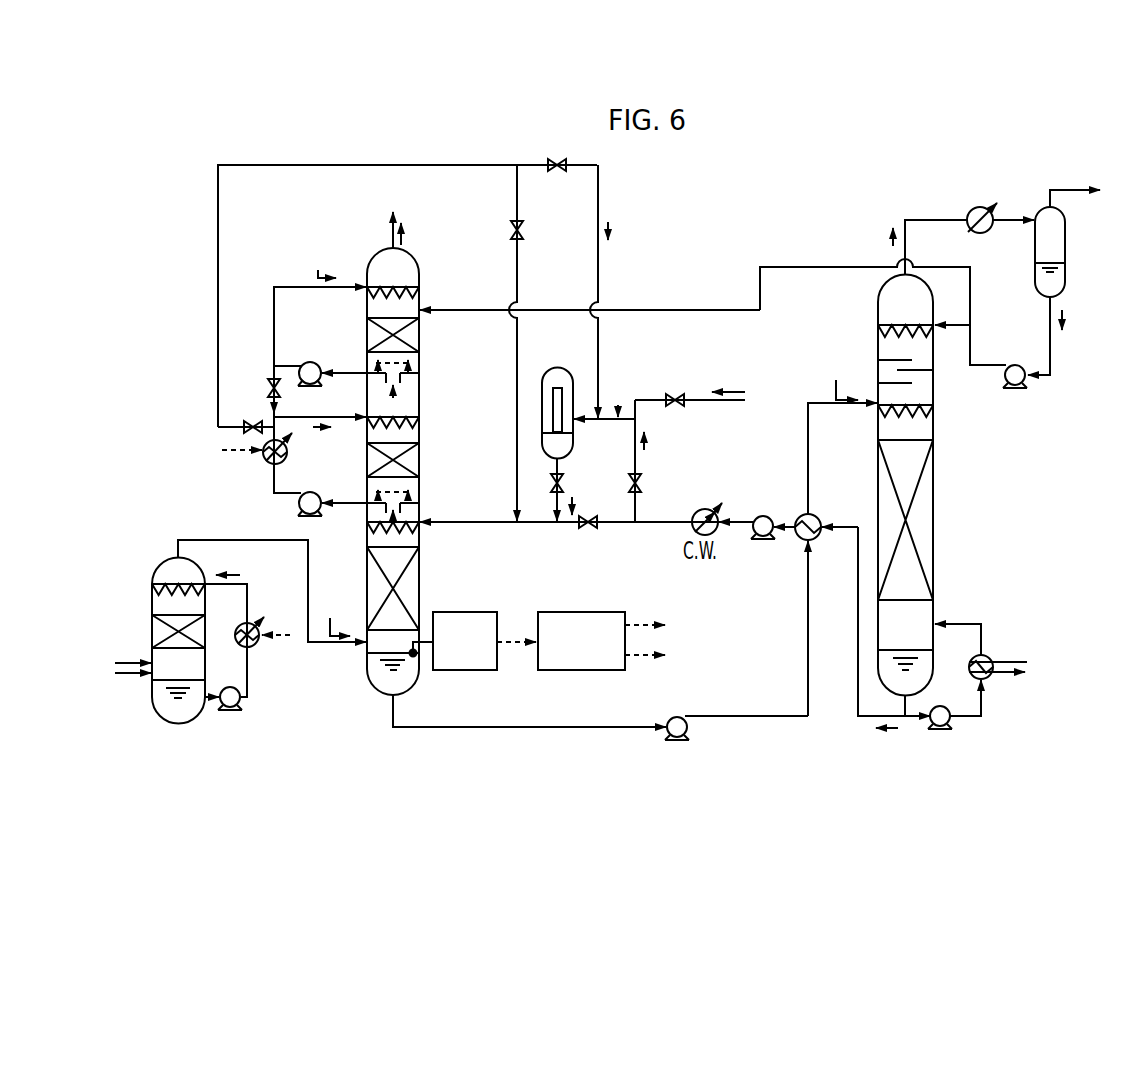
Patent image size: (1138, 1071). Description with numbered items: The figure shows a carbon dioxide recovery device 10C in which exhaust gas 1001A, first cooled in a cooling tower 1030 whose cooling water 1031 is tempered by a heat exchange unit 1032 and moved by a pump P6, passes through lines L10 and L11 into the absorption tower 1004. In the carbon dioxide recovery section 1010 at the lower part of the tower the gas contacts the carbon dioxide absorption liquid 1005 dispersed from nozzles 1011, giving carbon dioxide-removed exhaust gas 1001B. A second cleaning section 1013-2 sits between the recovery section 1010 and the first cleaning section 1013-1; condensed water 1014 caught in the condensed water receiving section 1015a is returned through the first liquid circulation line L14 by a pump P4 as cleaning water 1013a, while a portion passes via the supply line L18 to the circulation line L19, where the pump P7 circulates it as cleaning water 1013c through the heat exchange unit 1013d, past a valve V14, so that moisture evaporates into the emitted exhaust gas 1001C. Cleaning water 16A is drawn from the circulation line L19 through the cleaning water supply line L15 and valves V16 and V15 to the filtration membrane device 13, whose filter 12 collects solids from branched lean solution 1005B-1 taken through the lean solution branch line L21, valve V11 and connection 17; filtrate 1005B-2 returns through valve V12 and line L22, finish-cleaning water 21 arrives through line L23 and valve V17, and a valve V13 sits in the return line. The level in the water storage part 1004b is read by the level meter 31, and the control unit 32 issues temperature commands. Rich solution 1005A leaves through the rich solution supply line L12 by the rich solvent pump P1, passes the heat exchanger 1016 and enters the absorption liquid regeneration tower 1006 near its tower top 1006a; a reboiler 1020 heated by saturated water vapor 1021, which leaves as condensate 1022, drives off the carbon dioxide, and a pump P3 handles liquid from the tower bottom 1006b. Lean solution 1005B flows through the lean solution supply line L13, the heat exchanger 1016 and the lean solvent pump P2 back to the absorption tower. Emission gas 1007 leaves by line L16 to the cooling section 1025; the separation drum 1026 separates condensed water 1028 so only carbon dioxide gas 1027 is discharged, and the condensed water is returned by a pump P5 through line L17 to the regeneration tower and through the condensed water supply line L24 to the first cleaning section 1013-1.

The absorption tower 1004 is at (334, 242).
The water storage part 1004b is at (384, 692).
The CO2-absorption-solution-removed exhaust gas 1001C is at (402, 236).
The nozzles 1011 is at (420, 294).
The first cleaning section 1013-1 is at (367, 342).
The second cleaning section 1013-2 is at (419, 455).
The CO2 recovery section 1010 is at (419, 594).
The condensed water 1014 is at (420, 370).
The condensed water receiving section 1015a is at (367, 384).
The CO2-removed exhaust gas 1001B is at (392, 518).
The pump P4 is at (318, 368).
The first liquid circulation line L14 is at (272, 338).
The cleaning water 1013a is at (323, 260).
The supply line L18 is at (270, 384).
The valve V14 is at (252, 432).
The circulation line L19 is at (272, 496).
The heat exchange unit 1013d is at (264, 458).
The cleaning water 1013c is at (290, 436).
The pump P7 is at (306, 492).
The cleaning water supply line L15 is at (472, 165).
The valve V16 is at (556, 158).
The valve V15 is at (510, 233).
The cleaning water 16A is at (610, 232).
The filtration membrane device 13 is at (563, 364).
The filter 12 is at (566, 404).
The inlet line 17 is at (576, 382).
The valve V11 is at (640, 490).
The line L23 is at (686, 397).
The valve V17 is at (678, 407).
The cleaning water 21 is at (742, 391).
The branched lean solution 1005B-1 is at (648, 451).
The valve V12 is at (551, 486).
The filtrate 1005B-2 is at (574, 494).
The lean solution branch line L21 is at (634, 506).
The line L22 is at (554, 532).
The CO2 absorption liquid 1005 is at (440, 511).
The valve V13 is at (587, 532).
The condensed water supply line L24 is at (818, 267).
The lean solvent pump P2 is at (762, 516).
The heat exchanger 1016 is at (816, 515).
The rich solution 1005A is at (842, 433).
The lean solution supply line L13 is at (855, 702).
The absorption liquid regeneration tower 1006 is at (848, 326).
The tower top 1006a is at (880, 306).
The column bottom 1006b is at (887, 709).
The line L16 is at (903, 221).
The emission gas 1007 is at (892, 248).
The cooling section 1025 is at (968, 210).
The separation drum 1026 is at (1036, 267).
The CO2 gas 1027 is at (1064, 188).
The condensed water 1028 is at (1066, 321).
The line L17 is at (1052, 369).
The pump P5 is at (1016, 365).
The CO2 recovery device 10C is at (766, 200).
The pump P3 is at (944, 707).
The reboiler 1020 is at (992, 684).
The saturated water vapor 1021 is at (1000, 660).
The heating medium outlet 1022 is at (1015, 680).
The lean solution 1005B is at (888, 736).
The rich solution supply line L12 is at (538, 732).
The rich solvent pump P1 is at (678, 717).
The level meter 31 is at (466, 672).
The control unit 32 is at (584, 672).
The cooling tower 1030 is at (146, 572).
The cooling water 1031 is at (226, 576).
The pump P6 is at (230, 687).
The heat exchange unit 1032 is at (252, 648).
The line L10 is at (134, 661).
The exhaust gas containing CO2 1001A is at (130, 688).
The line L11 is at (322, 650).